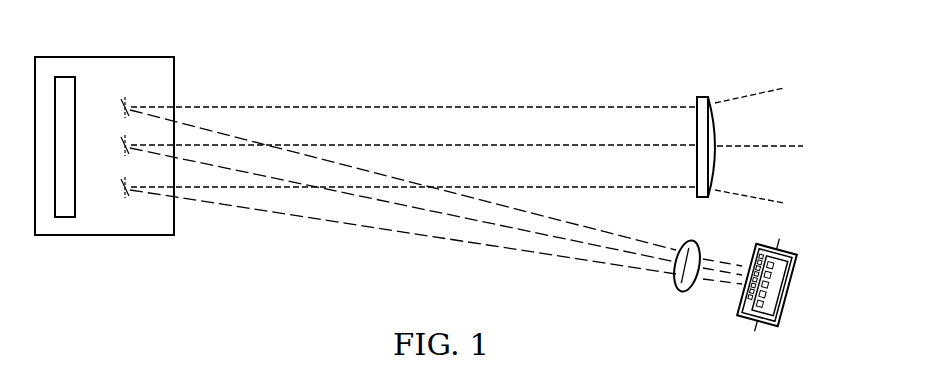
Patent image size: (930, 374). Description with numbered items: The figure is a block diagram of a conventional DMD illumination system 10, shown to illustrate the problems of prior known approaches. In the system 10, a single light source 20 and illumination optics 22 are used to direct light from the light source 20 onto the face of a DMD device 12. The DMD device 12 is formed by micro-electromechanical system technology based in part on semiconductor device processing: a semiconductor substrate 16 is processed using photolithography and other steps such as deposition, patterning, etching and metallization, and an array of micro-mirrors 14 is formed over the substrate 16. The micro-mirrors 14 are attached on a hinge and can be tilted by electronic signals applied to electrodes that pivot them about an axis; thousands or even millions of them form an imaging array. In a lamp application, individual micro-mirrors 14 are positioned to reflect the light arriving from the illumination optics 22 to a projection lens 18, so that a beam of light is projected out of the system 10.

The system 10 is at (304, 46).
The DMD device 12 is at (103, 236).
The micro-mirrors 14 is at (122, 146).
The semiconductor substrate 16 is at (75, 147).
The projection lens 18 is at (717, 135).
The light source 20 is at (787, 287).
The illumination optics 22 is at (683, 293).